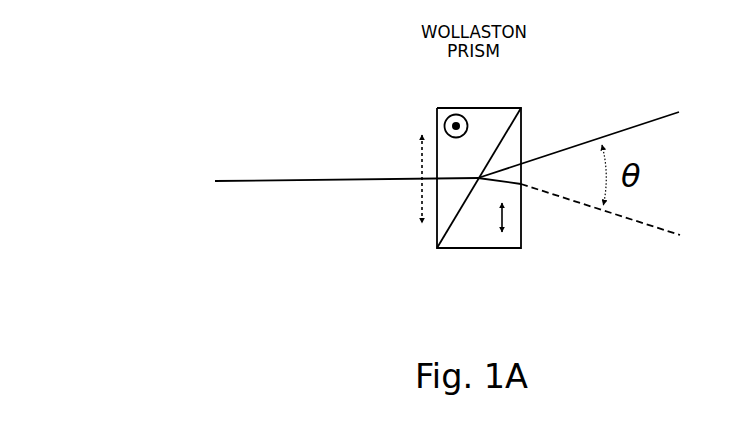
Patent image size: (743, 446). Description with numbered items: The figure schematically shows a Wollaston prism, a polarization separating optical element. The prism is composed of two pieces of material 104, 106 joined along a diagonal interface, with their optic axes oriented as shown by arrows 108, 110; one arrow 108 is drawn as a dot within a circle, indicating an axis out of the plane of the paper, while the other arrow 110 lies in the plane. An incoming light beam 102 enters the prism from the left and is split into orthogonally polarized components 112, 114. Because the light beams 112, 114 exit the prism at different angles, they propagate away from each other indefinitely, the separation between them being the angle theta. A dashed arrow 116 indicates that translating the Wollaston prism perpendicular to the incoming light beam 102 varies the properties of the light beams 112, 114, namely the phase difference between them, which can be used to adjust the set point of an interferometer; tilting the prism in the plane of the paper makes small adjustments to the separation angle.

The incoming light beam 102 is at (232, 190).
The piece of material 104 is at (498, 118).
The piece of material 106 is at (460, 237).
The arrow 108 is at (448, 108).
The arrow 110 is at (512, 222).
The orthogonally polarized component 112 is at (647, 113).
The orthogonally polarized component 114 is at (647, 240).
The dashed arrow 116 is at (415, 205).